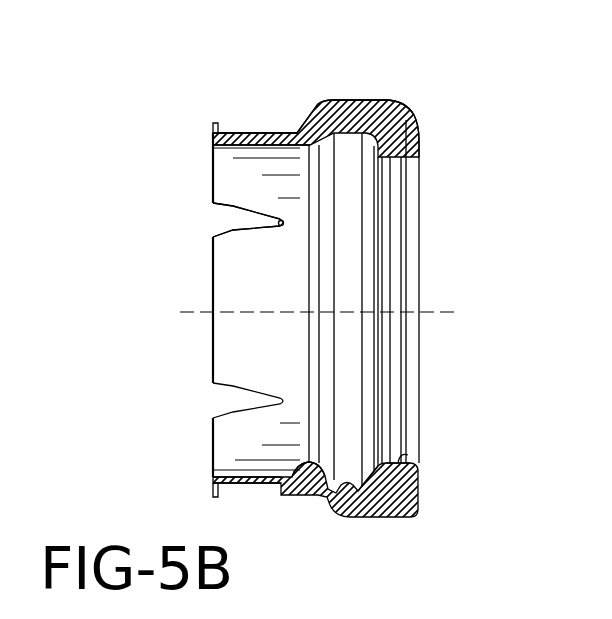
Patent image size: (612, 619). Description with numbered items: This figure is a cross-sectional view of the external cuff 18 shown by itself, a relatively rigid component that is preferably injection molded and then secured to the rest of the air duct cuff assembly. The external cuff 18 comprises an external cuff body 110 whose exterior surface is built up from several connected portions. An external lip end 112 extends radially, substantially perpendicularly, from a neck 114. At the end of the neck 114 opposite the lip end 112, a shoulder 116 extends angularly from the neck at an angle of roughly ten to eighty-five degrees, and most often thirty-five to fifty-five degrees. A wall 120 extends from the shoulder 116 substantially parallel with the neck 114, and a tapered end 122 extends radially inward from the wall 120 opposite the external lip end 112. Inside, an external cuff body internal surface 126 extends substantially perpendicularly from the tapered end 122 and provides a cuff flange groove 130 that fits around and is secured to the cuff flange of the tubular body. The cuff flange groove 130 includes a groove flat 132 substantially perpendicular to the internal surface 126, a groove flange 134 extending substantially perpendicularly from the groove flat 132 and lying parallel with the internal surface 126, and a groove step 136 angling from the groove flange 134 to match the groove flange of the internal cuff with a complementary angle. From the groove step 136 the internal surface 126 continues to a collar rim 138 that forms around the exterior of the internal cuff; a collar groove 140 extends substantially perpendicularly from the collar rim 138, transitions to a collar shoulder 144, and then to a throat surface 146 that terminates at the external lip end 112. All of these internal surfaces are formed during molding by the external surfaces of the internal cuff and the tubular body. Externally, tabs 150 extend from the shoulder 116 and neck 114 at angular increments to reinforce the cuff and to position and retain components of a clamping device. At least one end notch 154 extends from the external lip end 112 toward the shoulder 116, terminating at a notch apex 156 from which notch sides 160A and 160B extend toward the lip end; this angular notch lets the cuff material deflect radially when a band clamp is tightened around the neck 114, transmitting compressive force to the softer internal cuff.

The external cuff 18 is at (380, 67).
The external cuff body 110 is at (340, 94).
The external lip end 112 is at (212, 124).
The neck 114 is at (247, 132).
The shoulder 116 is at (316, 116).
The wall 120 is at (377, 102).
The tapered end 122 is at (413, 120).
The external cuff body internal surface 126 is at (413, 115).
The cuff flange groove 130 is at (399, 172).
The groove flat 132 is at (407, 460).
The groove flange 134 is at (403, 458).
The groove step 136 is at (400, 460).
The collar rim 138 is at (385, 465).
The collar groove 140 is at (334, 490).
The collar shoulder 144 is at (298, 470).
The throat surface 146 is at (243, 477).
The external tabs 150 is at (245, 130).
The end notch 154 is at (208, 216).
The notch apex 156 is at (276, 227).
The notch side 160A is at (210, 203).
The notch side 160B is at (212, 238).